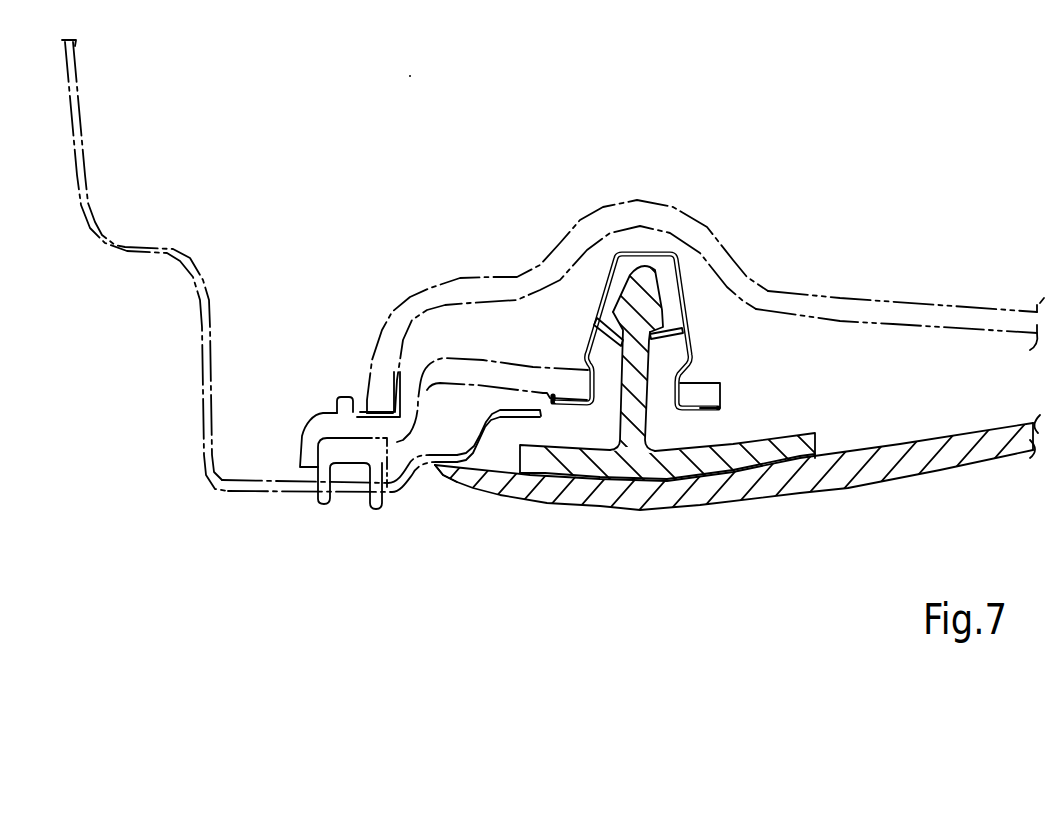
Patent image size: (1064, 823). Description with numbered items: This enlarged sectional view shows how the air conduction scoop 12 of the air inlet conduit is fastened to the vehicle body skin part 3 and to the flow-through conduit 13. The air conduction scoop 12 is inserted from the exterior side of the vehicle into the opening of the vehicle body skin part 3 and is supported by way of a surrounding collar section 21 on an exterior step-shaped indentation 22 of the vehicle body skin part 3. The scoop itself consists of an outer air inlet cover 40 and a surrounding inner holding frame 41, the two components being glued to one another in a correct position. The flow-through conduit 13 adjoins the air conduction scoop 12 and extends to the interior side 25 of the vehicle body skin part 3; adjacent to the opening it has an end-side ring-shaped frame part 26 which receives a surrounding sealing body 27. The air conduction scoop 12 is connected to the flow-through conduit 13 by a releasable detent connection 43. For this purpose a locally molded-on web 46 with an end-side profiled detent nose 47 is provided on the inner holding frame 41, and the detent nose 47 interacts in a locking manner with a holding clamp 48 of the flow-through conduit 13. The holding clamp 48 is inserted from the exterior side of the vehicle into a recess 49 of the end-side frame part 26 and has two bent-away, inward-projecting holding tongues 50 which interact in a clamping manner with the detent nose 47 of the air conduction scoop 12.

The vehicle body skin part 3 is at (211, 480).
The air conduction scoop 12 is at (848, 491).
The flow-through conduit 13 is at (655, 194).
The collar section 21 is at (458, 480).
The exterior step-shaped indentation 22 is at (411, 470).
The interior side 25 is at (250, 475).
The end-side ring-shaped frame part 26 is at (322, 405).
The sealing body 27 is at (318, 471).
The outer air inlet cover 40 is at (990, 447).
The inner holding frame 41 is at (760, 443).
The releasable detent connection 43 is at (710, 346).
The web 46 is at (623, 411).
The detent nose 47 is at (648, 295).
The holding clamp 48 is at (672, 244).
The recess 49 is at (657, 398).
The holding tongue 50 is at (594, 337).